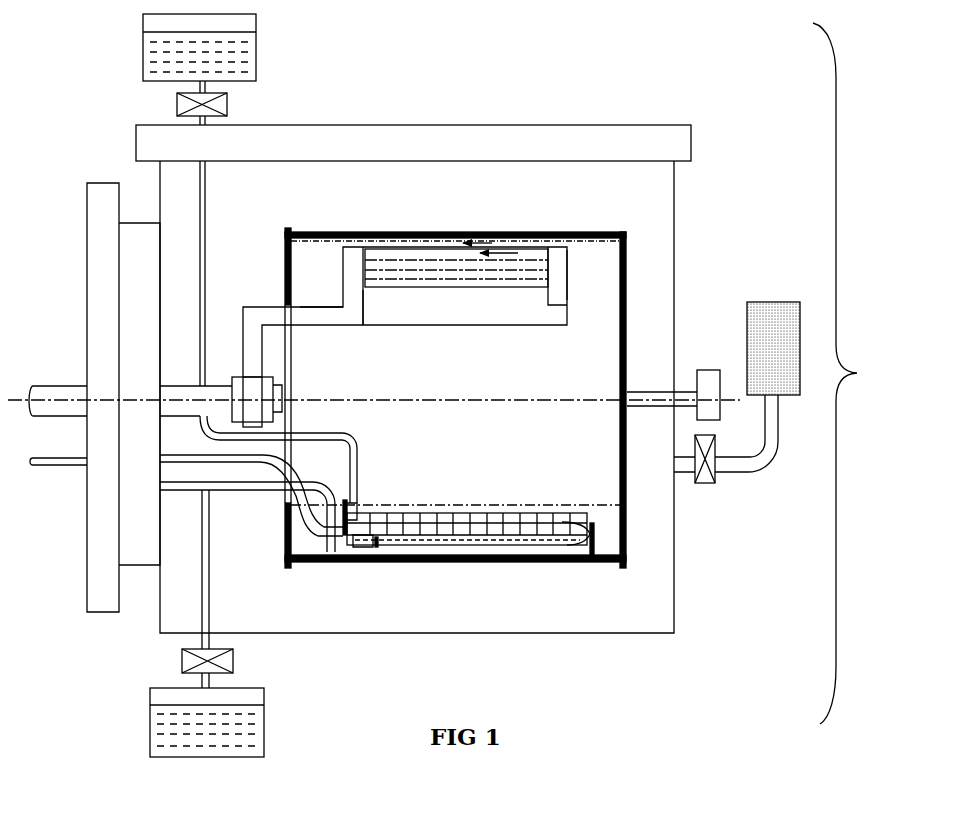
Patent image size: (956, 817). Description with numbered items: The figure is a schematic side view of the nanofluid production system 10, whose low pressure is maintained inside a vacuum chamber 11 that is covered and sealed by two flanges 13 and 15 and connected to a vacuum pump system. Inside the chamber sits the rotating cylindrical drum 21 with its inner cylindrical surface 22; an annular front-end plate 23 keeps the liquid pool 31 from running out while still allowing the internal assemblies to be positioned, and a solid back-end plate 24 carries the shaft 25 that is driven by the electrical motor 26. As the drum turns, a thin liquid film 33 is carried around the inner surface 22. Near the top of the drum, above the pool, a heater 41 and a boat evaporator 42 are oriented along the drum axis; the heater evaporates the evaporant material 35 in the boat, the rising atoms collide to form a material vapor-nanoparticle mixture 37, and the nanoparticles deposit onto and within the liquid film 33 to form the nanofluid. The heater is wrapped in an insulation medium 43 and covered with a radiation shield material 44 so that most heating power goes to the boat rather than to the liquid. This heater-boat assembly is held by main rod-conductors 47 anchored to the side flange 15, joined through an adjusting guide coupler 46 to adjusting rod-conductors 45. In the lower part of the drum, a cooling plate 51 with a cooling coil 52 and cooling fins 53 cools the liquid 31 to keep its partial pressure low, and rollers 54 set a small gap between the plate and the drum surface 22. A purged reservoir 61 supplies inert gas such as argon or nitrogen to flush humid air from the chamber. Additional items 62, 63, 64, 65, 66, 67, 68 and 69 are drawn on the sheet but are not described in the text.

The system 10 is at (835, 373).
The vacuum chamber 11 is at (233, 202).
The flange 13 is at (150, 155).
The side flange 15 is at (98, 195).
The cylindrical drum 21 is at (603, 229).
The inner cylindrical surface 22 is at (605, 242).
The annular front-end plate 23 is at (283, 262).
The back-end plate 24 is at (627, 307).
The shaft 25 is at (652, 390).
The electrical motor 26 is at (707, 378).
The liquid pool 31 is at (603, 508).
The liquid film 33 is at (575, 280).
The evaporant material 35 is at (518, 253).
The material vapor-nanoparticle mixture 37 is at (492, 243).
The heater 41 is at (447, 256).
The boat evaporator 42 is at (425, 253).
The insulation medium 43 is at (410, 293).
The radiation shield material 44 is at (387, 300).
The adjusting rod-conductor 45 is at (308, 311).
The adjusting guide coupler 46 is at (233, 425).
The main rod-conductor 47 is at (196, 406).
The cooling plate 51 is at (424, 523).
The cooling coil 52 is at (309, 497).
The cooling fins 53 is at (483, 523).
The rollers 54 is at (597, 522).
The purged reservoir 61 is at (785, 377).
The supply line 62 is at (750, 468).
The valve 63 is at (705, 483).
The supply tank 64 is at (160, 40).
The supply pipe 65 is at (193, 87).
The supply valve 66 is at (176, 114).
The drain tank 67 is at (160, 718).
The drain pipe 68 is at (200, 681).
The drain valve 69 is at (180, 662).